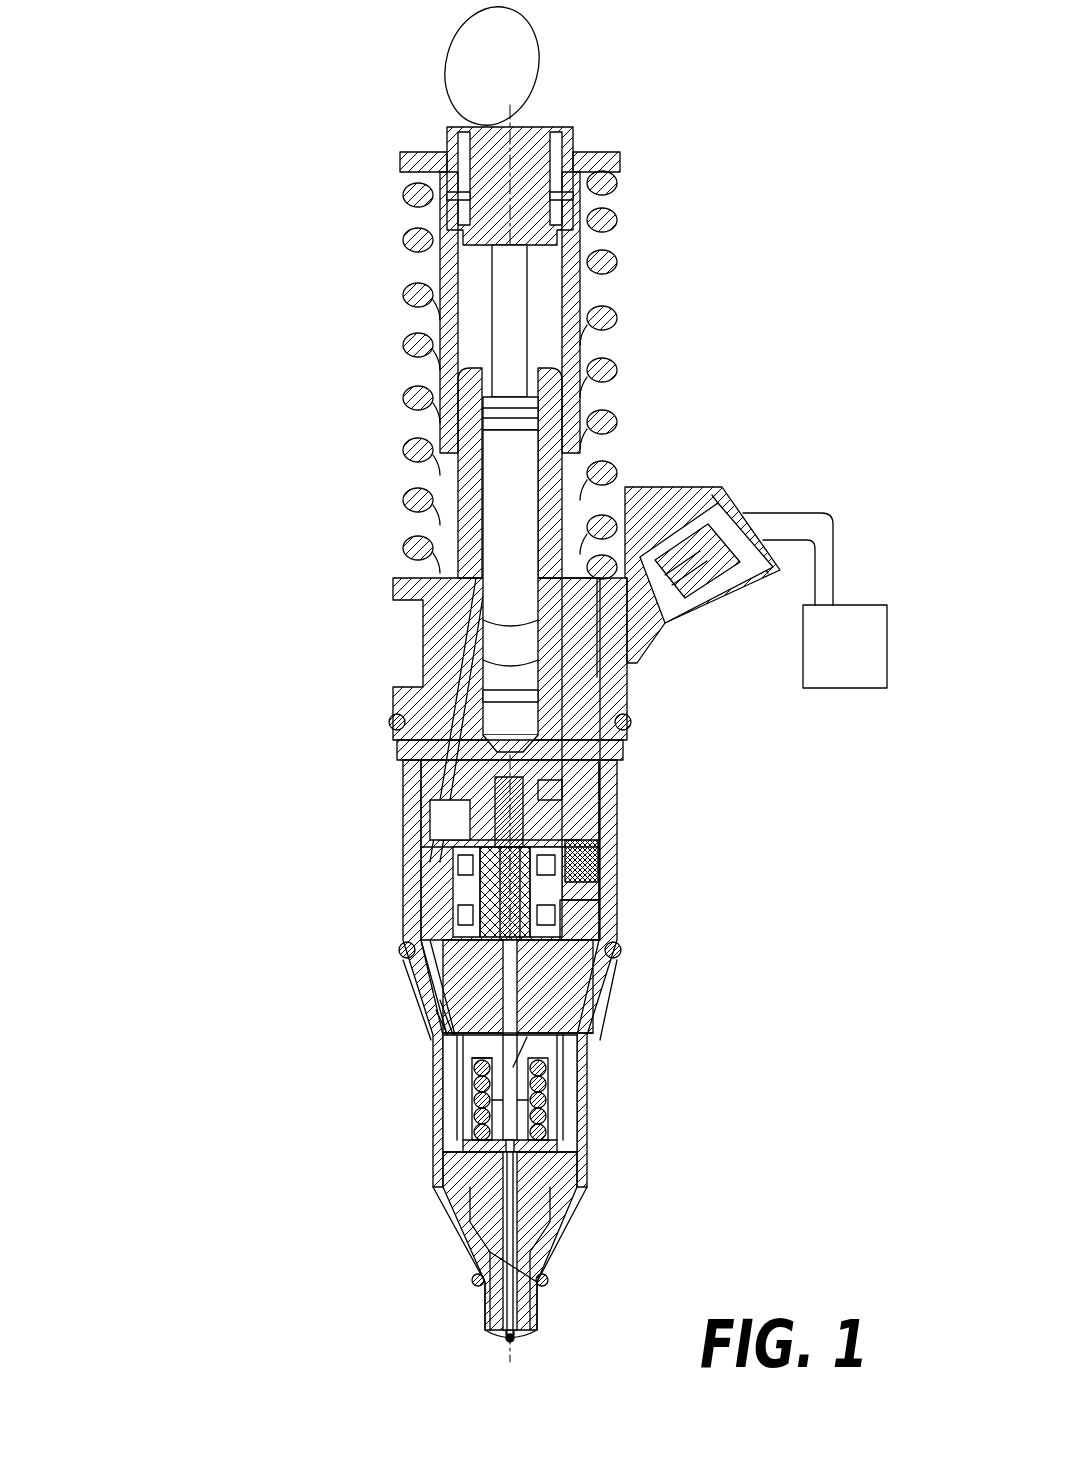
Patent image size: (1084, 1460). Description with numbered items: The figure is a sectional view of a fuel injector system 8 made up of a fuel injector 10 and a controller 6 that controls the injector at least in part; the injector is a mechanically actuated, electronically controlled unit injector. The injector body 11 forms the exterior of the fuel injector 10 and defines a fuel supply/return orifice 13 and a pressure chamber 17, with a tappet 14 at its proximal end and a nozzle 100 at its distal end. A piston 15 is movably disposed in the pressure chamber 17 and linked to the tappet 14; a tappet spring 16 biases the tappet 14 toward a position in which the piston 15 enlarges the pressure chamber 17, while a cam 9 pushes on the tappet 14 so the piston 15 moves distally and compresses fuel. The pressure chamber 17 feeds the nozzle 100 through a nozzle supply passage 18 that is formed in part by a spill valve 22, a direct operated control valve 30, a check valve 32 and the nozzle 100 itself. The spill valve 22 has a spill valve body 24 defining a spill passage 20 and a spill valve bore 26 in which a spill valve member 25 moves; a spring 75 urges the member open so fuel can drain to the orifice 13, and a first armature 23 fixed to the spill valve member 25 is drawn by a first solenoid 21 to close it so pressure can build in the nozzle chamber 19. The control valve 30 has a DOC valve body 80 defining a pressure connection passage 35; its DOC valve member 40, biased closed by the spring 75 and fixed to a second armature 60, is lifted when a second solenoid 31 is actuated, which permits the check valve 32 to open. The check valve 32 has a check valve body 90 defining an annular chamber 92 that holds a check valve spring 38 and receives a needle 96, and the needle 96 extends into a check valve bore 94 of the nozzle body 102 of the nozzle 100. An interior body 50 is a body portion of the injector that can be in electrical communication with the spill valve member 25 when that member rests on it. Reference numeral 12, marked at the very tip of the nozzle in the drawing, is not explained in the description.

The controller 6 is at (887, 645).
The fuel injector system 8 is at (128, 252).
The cam 9 is at (541, 70).
The fuel injector 10 is at (352, 268).
The injector body 11 is at (440, 610).
The nozzle tip orifice 12 is at (512, 1340).
The fuel supply/return orifice 13 is at (600, 870).
The tappet 14 is at (608, 150).
The piston 15 is at (525, 470).
The tappet spring 16 is at (606, 266).
The pressure chamber 17 is at (522, 700).
The nozzle supply passage 18 is at (437, 987).
The nozzle chamber 19 is at (527, 1217).
The spill passage 20 is at (475, 798).
The first solenoid 21 is at (453, 887).
The spill valve 22 is at (548, 814).
The first armature 23 is at (480, 837).
The spill valve body 24 is at (553, 790).
The spill valve member 25 is at (493, 847).
The spill valve bore 26 is at (497, 828).
The direct operated control (DOC) valve 30 is at (553, 973).
The second solenoid 31 is at (583, 923).
The check valve 32 is at (562, 1142).
The pressure connection passage 35 is at (458, 1022).
The check valve spring 38 is at (480, 1118).
The DOC valve member 40 is at (443, 980).
The interior body 50 is at (560, 757).
The second armature 60 is at (423, 933).
The spring 75 is at (467, 873).
The DOC valve body 80 is at (558, 1022).
The check valve body 90 is at (547, 1117).
The annular chamber 92 is at (548, 1070).
The check valve bore 94 is at (517, 1302).
The needle 96 is at (512, 1182).
The nozzle 100 is at (448, 1305).
The nozzle body 102 is at (532, 1267).